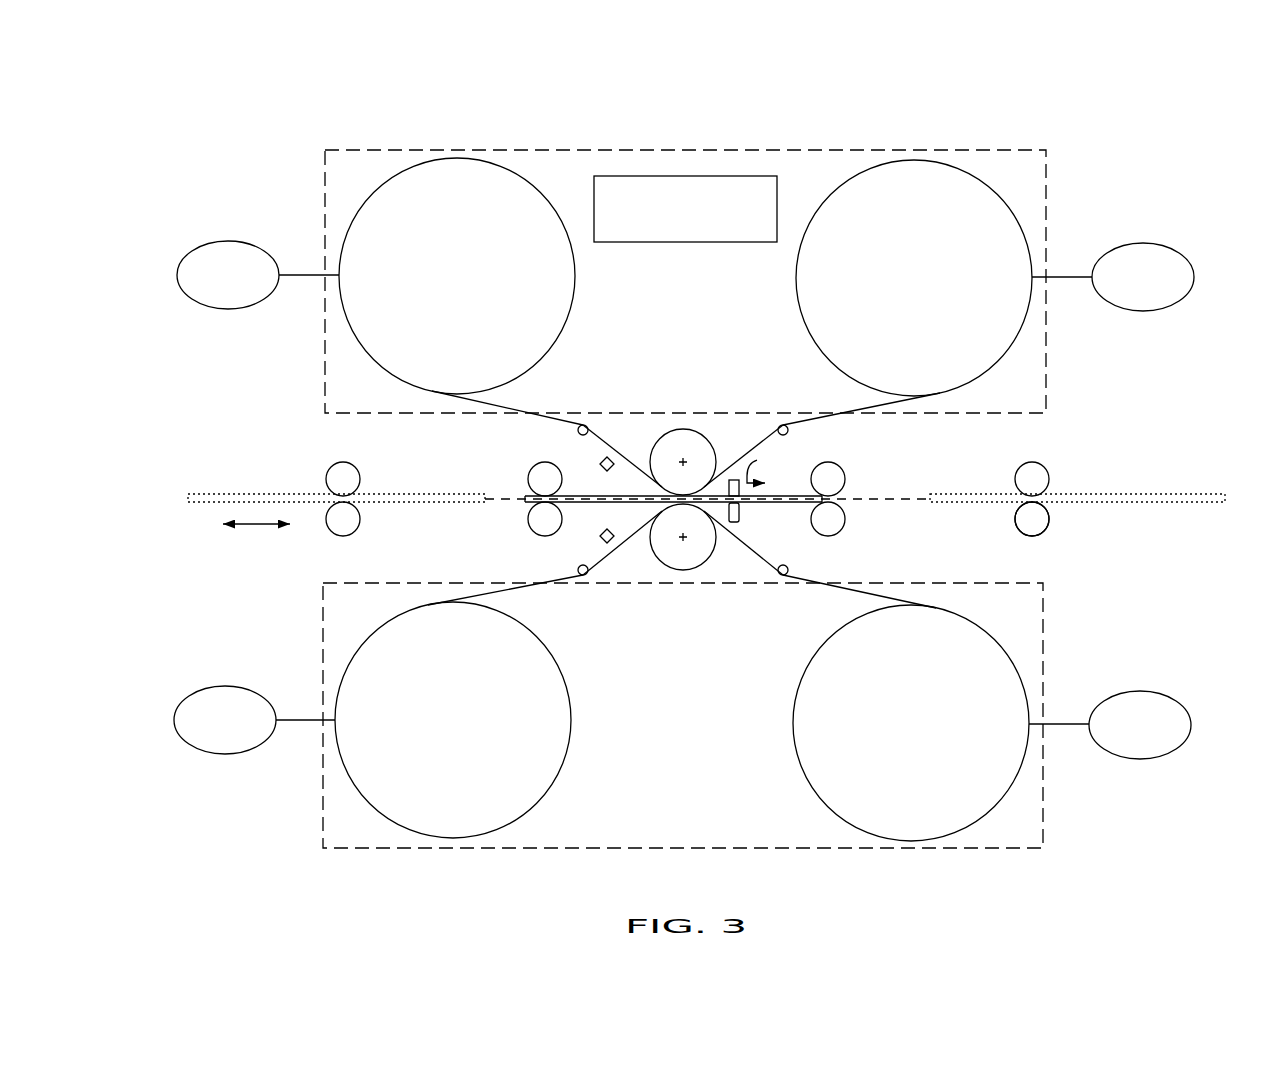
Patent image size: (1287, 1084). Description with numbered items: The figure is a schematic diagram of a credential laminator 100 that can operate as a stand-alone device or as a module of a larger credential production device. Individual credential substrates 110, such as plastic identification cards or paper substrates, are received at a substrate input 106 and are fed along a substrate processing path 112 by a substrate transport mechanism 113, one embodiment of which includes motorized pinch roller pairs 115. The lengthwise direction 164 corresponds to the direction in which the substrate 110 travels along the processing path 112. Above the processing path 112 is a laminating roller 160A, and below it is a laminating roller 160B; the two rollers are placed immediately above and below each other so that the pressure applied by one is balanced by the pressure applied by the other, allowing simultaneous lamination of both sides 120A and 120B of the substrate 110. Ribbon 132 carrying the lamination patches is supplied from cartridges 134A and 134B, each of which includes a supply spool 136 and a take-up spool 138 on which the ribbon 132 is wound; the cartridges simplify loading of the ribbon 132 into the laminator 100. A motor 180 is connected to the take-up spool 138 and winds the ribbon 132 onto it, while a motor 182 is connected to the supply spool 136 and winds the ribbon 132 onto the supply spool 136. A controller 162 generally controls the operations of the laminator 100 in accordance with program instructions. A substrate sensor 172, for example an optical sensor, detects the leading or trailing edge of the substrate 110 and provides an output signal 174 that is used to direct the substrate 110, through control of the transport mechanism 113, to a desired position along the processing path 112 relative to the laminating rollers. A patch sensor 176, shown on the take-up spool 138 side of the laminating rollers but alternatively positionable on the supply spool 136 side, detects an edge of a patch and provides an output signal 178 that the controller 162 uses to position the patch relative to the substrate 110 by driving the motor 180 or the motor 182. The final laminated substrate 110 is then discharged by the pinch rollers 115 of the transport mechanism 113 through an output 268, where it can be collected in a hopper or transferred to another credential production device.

The laminator 100 is at (1104, 157).
The substrate input 106 is at (1067, 488).
The credential substrate 110 is at (226, 490).
The substrate processing path 112 is at (500, 496).
The substrate transport mechanism 113 is at (1059, 532).
The pinch roller pairs 115 is at (327, 465).
The first side of credential substrate 120A is at (804, 496).
The second side of credential substrate 120B is at (572, 506).
The ribbon 132 is at (873, 402).
The cartridge 134A is at (1033, 203).
The cartridge 134B is at (1028, 627).
The supply spool 136 is at (985, 357).
The take-up spool 138 is at (362, 322).
The laminating roller 160A is at (683, 431).
The laminating roller 160B is at (683, 570).
The controller 162 is at (670, 176).
The lengthwise direction 164 is at (257, 526).
The substrate sensor 172 is at (734, 523).
The output signal 174 is at (770, 465).
The patch sensor 176 is at (612, 452).
The output signal 178 is at (588, 482).
The motor 180 is at (213, 243).
The motor 182 is at (1160, 253).
The output 268 is at (325, 491).